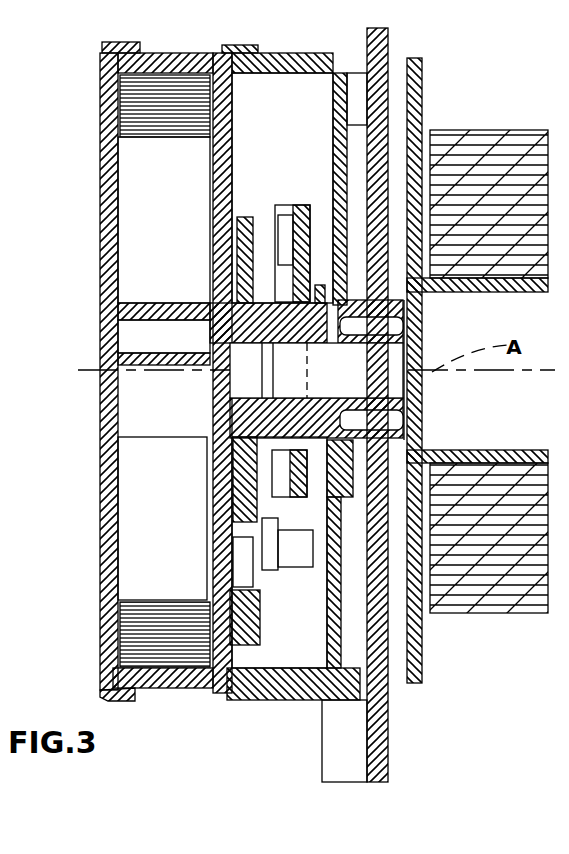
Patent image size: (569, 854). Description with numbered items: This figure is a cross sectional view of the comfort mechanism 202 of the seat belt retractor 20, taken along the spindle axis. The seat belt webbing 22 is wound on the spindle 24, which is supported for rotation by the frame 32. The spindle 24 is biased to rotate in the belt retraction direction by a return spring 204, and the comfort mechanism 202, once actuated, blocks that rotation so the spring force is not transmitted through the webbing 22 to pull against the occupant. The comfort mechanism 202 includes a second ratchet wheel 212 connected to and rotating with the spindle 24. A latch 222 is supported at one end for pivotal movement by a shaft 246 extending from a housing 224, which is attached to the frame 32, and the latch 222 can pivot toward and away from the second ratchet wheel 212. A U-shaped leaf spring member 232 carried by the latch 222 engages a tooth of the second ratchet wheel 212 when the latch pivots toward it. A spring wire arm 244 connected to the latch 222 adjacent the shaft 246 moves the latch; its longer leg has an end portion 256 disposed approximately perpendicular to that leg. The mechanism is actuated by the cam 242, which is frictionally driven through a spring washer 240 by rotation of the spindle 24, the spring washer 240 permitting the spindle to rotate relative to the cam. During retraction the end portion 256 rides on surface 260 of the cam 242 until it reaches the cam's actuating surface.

The seat belt retractor 20 is at (447, 96).
The seat belt webbing 22 is at (484, 146).
The spindle 24 is at (450, 448).
The frame 32 is at (376, 735).
The comfort mechanism 202 is at (272, 178).
The return spring 204 is at (150, 647).
The second ratchet wheel 212 is at (243, 222).
The latch 222 is at (248, 620).
The housing 224 is at (302, 687).
The leaf spring member 232 is at (247, 525).
The spring washer 240 is at (313, 297).
The cam 242 is at (293, 205).
The spring wire arm 244 is at (255, 387).
The shaft 246 is at (295, 550).
The end portion 256 is at (222, 296).
The surface 260 is at (272, 278).